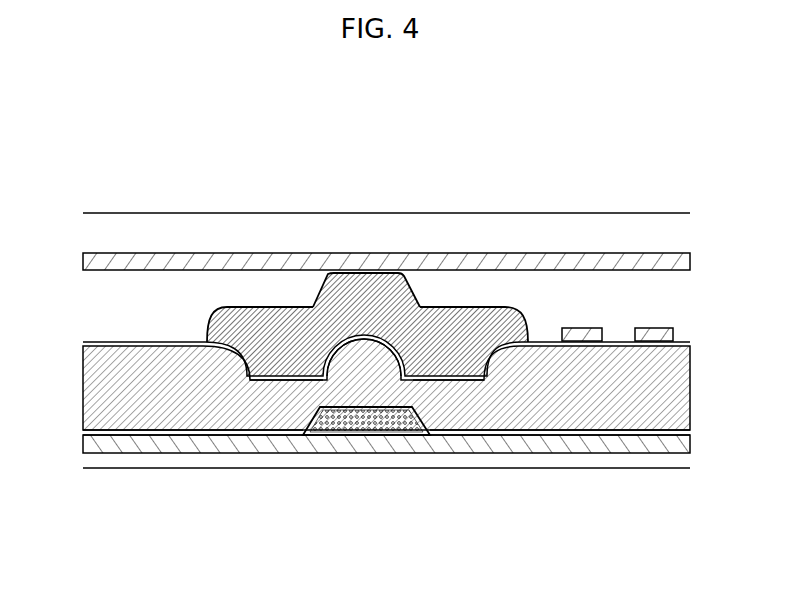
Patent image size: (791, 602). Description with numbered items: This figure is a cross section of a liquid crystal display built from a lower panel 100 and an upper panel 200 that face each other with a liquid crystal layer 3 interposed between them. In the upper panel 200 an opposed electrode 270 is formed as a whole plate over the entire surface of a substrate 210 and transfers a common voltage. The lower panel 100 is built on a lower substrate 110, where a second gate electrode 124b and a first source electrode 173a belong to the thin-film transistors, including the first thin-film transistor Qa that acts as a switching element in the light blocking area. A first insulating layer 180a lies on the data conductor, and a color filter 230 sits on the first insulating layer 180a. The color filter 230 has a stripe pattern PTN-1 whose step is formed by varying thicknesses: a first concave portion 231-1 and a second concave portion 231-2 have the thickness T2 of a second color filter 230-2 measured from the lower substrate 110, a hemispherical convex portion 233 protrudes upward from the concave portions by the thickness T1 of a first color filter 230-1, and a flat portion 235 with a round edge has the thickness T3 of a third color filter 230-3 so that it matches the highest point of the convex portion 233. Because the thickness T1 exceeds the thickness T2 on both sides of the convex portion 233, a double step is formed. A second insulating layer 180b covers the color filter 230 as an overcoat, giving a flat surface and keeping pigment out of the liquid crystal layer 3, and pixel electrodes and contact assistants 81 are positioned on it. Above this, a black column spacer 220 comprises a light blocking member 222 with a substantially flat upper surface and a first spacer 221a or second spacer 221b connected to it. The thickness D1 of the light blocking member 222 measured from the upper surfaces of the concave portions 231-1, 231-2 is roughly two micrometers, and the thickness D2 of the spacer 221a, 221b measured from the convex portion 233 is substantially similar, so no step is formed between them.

The upper panel 200 is at (75, 213).
The substrate 210 is at (200, 226).
The opposed electrode 270 is at (140, 263).
The liquid crystal layer 3 is at (75, 272).
The black column spacer 220 is at (368, 271).
The light blocking member 222 is at (253, 318).
The first spacer 221a is at (365, 236).
The second spacer 221b is at (344, 280).
The convex portion 233 is at (473, 300).
The lower panel 100 is at (75, 343).
The color filter 230 is at (640, 393).
The first color filter 230-1 is at (383, 390).
The second color filter 230-2 is at (287, 410).
The third color filter 230-3 is at (145, 393).
The first concave portion 231-1 is at (457, 380).
The second concave portion 231-2 is at (263, 380).
The flat portion 235 is at (618, 356).
The first insulating layer 180a is at (690, 432).
The second insulating layer 180b is at (690, 343).
The first source electrode 173a is at (197, 447).
The second gate electrode 124b is at (370, 438).
The lower substrate 110 is at (93, 468).
The contact assistants 81 is at (578, 329).
The first thin-film transistor Qa is at (333, 443).
The stripe pattern PTN-1 is at (515, 398).
The thickness of the light blocking member D1 is at (278, 309).
The thickness of the spacer D2 is at (367, 274).
The thickness of the first color filter T1 is at (367, 337).
The thickness of the second color filter T2 is at (475, 380).
The thickness of the third color filter T3 is at (550, 343).